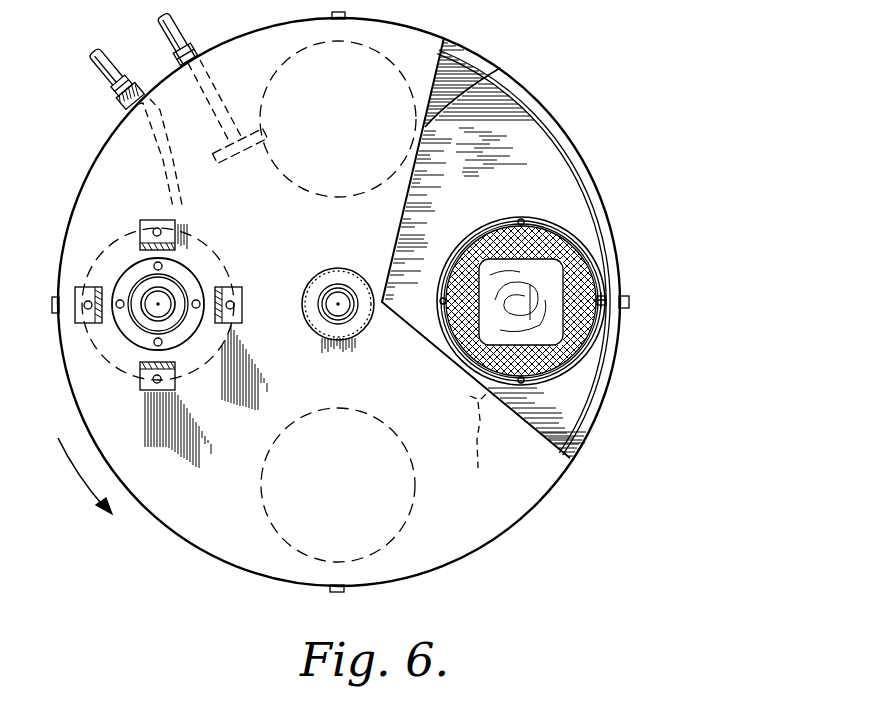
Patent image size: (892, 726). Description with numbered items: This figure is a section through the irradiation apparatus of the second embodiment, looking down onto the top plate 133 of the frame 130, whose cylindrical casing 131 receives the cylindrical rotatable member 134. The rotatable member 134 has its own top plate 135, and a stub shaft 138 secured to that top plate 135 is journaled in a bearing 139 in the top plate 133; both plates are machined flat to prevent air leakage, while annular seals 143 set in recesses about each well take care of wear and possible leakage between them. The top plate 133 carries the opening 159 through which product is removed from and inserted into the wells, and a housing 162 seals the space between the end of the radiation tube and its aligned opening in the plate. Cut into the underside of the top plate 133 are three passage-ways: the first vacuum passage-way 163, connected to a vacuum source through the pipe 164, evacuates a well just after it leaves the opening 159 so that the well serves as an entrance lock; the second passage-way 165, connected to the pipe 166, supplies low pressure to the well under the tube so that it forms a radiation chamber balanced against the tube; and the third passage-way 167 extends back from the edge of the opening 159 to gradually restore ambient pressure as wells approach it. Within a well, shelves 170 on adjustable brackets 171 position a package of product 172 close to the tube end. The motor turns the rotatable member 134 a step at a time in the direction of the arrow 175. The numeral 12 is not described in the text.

The head plate 12 is at (424, 58).
The frame 130 is at (519, 519).
The cylindrical casing 131 is at (605, 211).
The top plate 133 is at (390, 211).
The cylindrical rotatable member 134 is at (590, 426).
The top plate 135 is at (508, 128).
The stub shaft 138 is at (338, 303).
The bearing 139 is at (340, 318).
The annular seals 143 is at (593, 264).
The opening 159 is at (488, 79).
The housing 162 is at (173, 290).
The first vacuum passage-way 163 is at (240, 122).
The pipe 164 is at (180, 36).
The second passage-way 165 is at (187, 213).
The pipe 166 is at (100, 63).
The third passage-way 167 is at (497, 442).
The shelves 170 is at (576, 363).
The adjustable brackets 171 is at (533, 221).
The package of product 172 is at (548, 329).
The arrow 175 is at (84, 488).